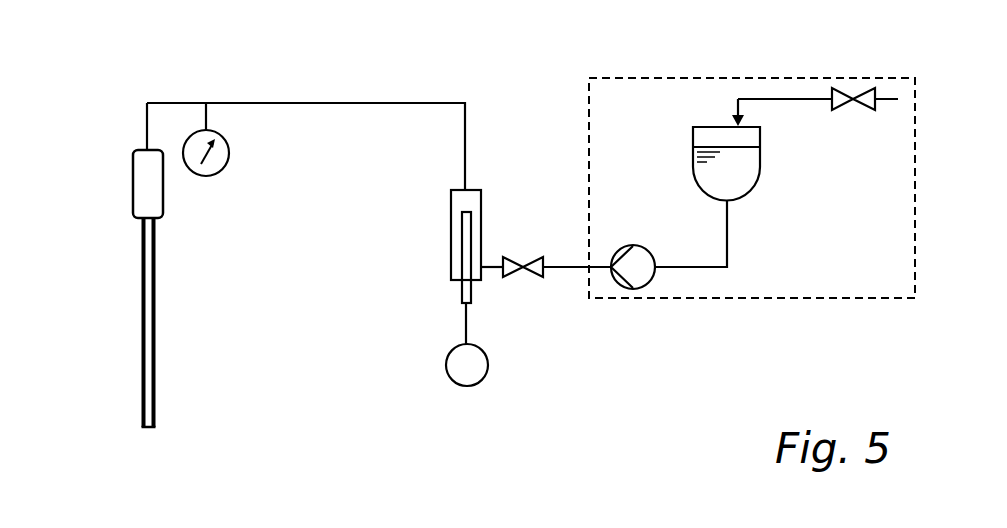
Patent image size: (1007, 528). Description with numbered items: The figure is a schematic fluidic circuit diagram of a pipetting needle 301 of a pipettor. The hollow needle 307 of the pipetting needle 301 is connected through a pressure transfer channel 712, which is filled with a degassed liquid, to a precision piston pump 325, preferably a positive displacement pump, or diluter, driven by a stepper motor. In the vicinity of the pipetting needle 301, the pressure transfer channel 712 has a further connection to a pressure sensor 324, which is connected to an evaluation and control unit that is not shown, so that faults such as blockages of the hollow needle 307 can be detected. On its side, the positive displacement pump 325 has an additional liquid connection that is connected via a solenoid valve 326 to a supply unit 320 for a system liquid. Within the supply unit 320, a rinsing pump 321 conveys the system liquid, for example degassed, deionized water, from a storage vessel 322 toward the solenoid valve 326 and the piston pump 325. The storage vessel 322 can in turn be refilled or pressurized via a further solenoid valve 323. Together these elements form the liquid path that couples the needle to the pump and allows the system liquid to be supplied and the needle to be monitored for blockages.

The pressure transfer channel 712 is at (313, 103).
The pipetting needle 301 is at (129, 180).
The hollow needle 307 is at (141, 333).
The pressure sensor 324 is at (208, 176).
The precision piston pump 325 is at (450, 247).
The solenoid valve 326 is at (513, 262).
The supply unit 320 is at (727, 77).
The rinsing pump 321 is at (633, 289).
The storage vessel 322 is at (693, 162).
The solenoid valve 323 is at (853, 110).